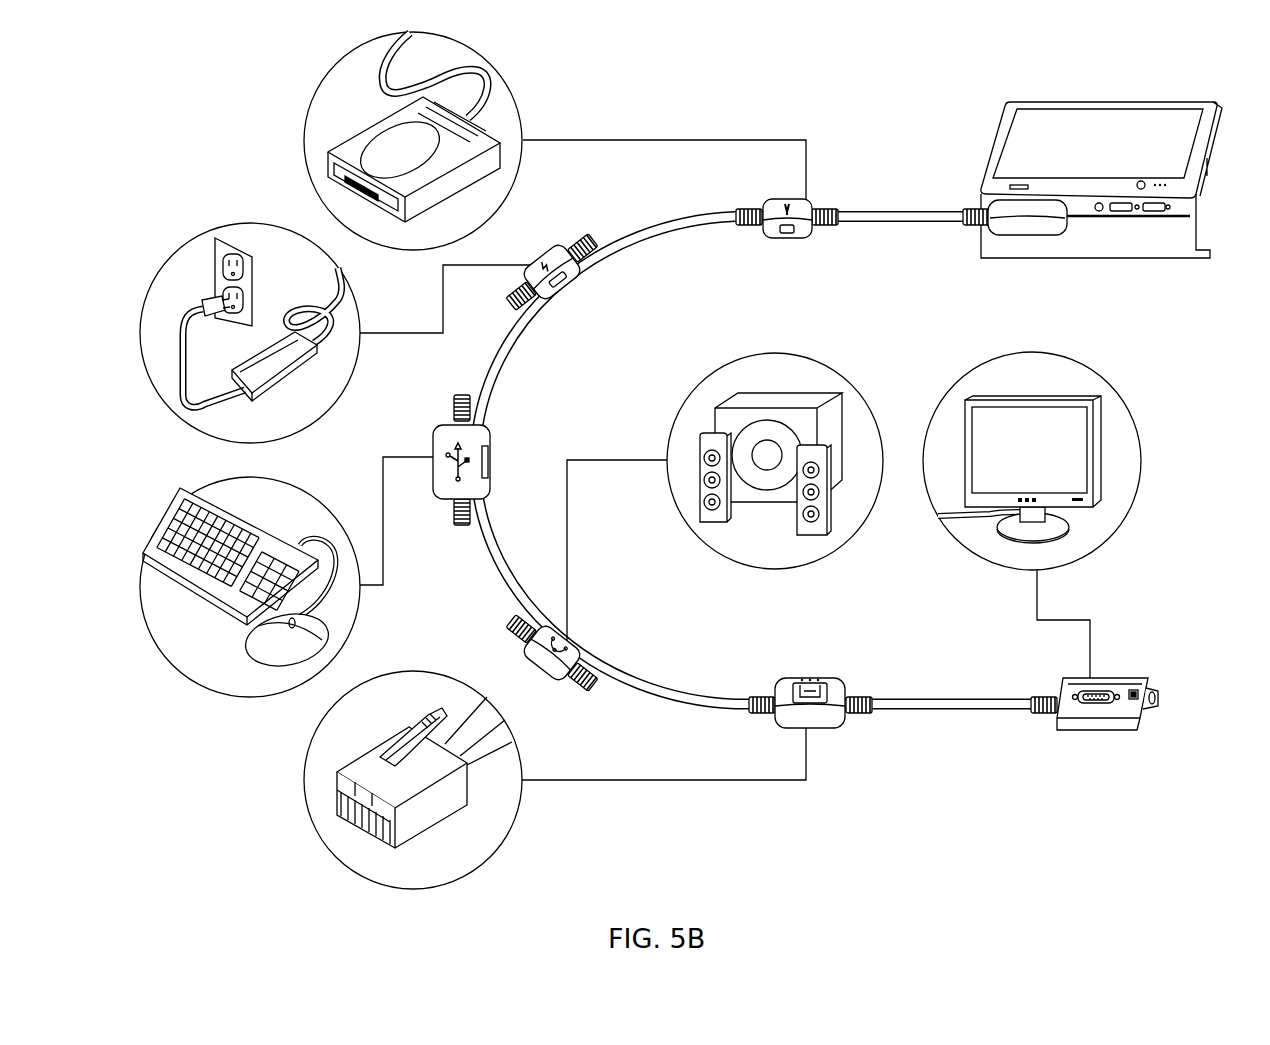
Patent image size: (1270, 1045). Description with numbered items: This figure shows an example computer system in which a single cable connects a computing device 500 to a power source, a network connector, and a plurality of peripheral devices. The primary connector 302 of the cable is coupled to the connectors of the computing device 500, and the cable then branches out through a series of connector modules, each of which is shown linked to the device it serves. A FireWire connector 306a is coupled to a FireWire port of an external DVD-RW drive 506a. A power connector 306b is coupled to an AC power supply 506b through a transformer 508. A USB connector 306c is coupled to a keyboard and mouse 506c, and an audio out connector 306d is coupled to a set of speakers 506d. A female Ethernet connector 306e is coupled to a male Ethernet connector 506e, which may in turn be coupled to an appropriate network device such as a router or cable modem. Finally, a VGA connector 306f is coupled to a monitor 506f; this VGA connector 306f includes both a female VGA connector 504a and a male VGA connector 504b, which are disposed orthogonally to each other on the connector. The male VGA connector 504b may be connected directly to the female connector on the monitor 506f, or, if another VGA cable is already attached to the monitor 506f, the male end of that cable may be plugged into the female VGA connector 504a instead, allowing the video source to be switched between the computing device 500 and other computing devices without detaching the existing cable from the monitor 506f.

The computing device 500 is at (1072, 100).
The primary connector 302 is at (1033, 228).
The FireWire connector 306a is at (800, 232).
The power connector 306b is at (573, 272).
The USB connector 306c is at (483, 441).
The audio out connector 306d is at (578, 652).
The female Ethernet connector 306e is at (828, 682).
The VGA connector 306f is at (1134, 703).
The female VGA connector 504a is at (1098, 701).
The male VGA connector 504b is at (1158, 697).
The external DVD-RW drive 506a is at (523, 127).
The AC power supply 506b is at (236, 256).
The keyboard and mouse 506c is at (198, 592).
The set of speakers 506d is at (797, 393).
The male Ethernet connector 506e is at (450, 815).
The monitor 506f is at (1065, 397).
The transformer 508 is at (295, 372).